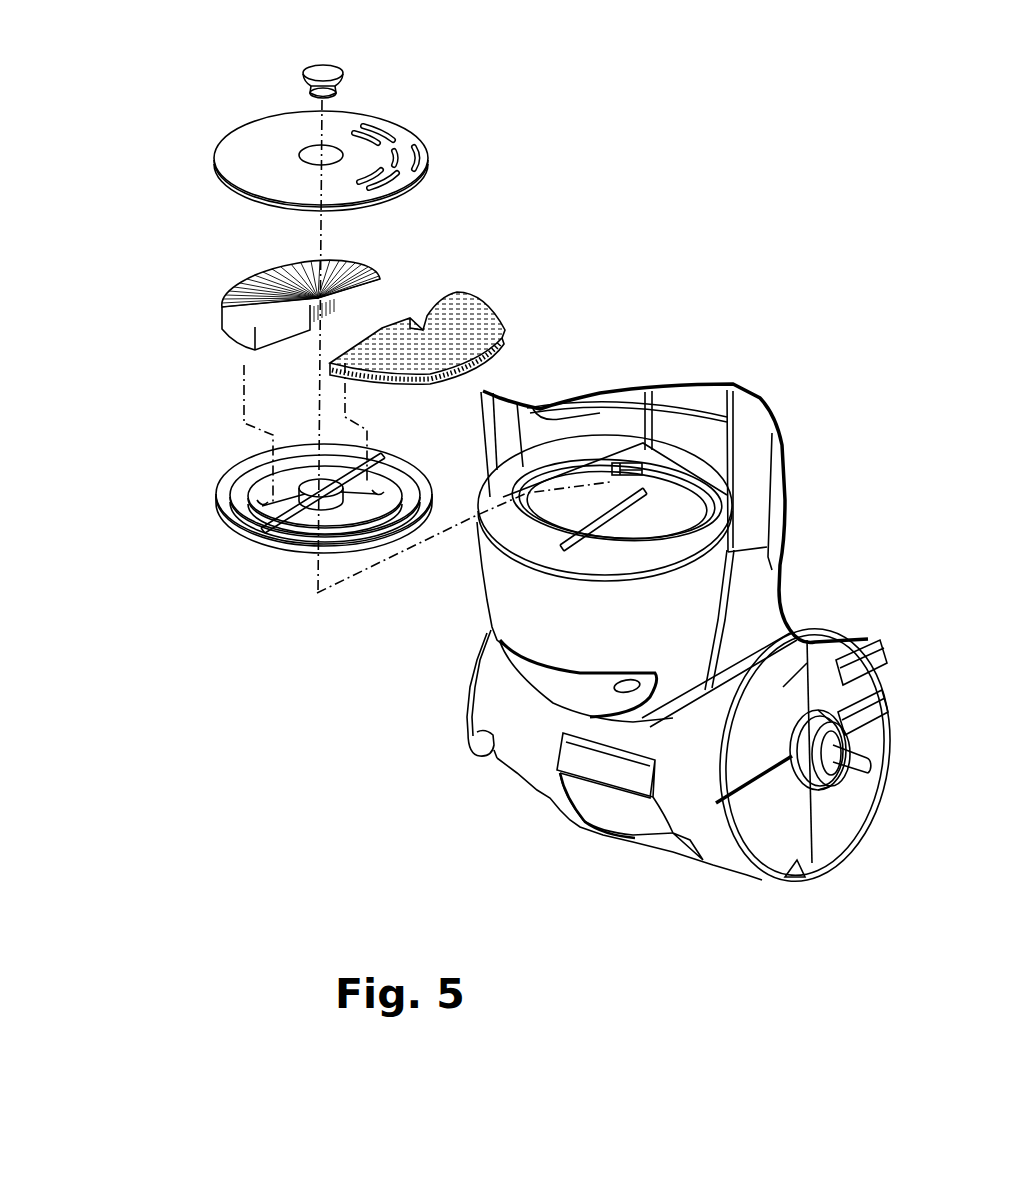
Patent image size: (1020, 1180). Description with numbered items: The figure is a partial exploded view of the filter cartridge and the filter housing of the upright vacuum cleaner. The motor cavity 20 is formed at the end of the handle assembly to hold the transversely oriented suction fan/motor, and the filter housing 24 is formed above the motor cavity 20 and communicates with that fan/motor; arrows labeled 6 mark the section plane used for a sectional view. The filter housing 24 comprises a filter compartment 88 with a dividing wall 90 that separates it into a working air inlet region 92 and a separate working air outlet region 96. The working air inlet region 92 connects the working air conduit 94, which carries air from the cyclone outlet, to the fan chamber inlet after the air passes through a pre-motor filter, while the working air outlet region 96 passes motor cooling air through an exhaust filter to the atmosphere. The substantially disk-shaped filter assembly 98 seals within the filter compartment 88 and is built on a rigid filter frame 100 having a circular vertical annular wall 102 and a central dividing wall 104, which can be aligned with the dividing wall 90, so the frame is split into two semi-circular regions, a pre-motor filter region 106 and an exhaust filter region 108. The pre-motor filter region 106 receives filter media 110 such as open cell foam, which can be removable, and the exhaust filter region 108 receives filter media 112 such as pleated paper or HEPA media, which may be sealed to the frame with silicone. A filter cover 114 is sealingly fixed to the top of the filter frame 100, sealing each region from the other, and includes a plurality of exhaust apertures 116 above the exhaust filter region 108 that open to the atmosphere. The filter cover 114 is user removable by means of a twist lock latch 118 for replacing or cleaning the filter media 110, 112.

The section line 6- 6 is at (480, 493).
The motor cavity 20 is at (657, 620).
The filter housing 24 is at (497, 527).
The filter compartment 88 is at (616, 453).
The dividing wall 90 is at (530, 543).
The working air inlet region 92 is at (547, 538).
The working air conduit 94 is at (622, 463).
The working air outlet region 96 is at (647, 538).
The filter cartridge 98 is at (103, 433).
The filter frame 100 is at (291, 518).
The vertical annular wall 102 is at (222, 472).
The dividing wall 104 is at (290, 505).
The pre-motor filter region 106 is at (378, 488).
The exhaust filter region 108 is at (256, 502).
The filter media 110 is at (478, 300).
The filter media 112 is at (243, 300).
The filter cover 114 is at (312, 135).
The exhaust apertures 116 is at (414, 147).
The twist lock latch 118 is at (318, 73).